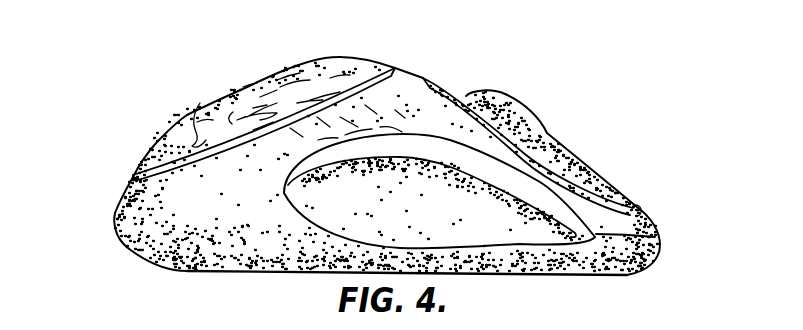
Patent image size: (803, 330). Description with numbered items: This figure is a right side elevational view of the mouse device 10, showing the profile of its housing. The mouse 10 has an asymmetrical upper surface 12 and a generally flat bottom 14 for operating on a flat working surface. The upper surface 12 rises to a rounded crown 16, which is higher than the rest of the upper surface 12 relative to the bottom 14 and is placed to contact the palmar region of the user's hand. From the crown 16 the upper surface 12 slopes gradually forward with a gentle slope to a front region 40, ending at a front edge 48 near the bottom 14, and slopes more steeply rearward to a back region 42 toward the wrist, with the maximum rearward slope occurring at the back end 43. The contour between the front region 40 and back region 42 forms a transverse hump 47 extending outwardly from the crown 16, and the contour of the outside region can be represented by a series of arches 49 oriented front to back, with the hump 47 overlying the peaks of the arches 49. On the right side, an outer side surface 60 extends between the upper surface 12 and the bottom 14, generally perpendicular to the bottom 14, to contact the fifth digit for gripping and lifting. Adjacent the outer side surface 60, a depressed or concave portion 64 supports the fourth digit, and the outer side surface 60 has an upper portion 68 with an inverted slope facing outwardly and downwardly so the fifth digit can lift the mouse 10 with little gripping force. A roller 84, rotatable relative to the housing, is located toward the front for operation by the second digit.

The mouse device 10 is at (687, 53).
The upper surface 12 is at (400, 70).
The bottom 14 is at (237, 274).
The crown 16 is at (337, 57).
The front region 40 is at (611, 182).
The back region 42 is at (157, 140).
The back end 43 is at (112, 218).
The transverse hump 47 is at (280, 82).
The front edge 48 is at (658, 237).
The arches 49 is at (172, 126).
The outer side surface 60 is at (405, 229).
The depressed portion 64 is at (543, 168).
The upper portion of the outer side surface 68 is at (490, 187).
The roller 84 is at (528, 107).